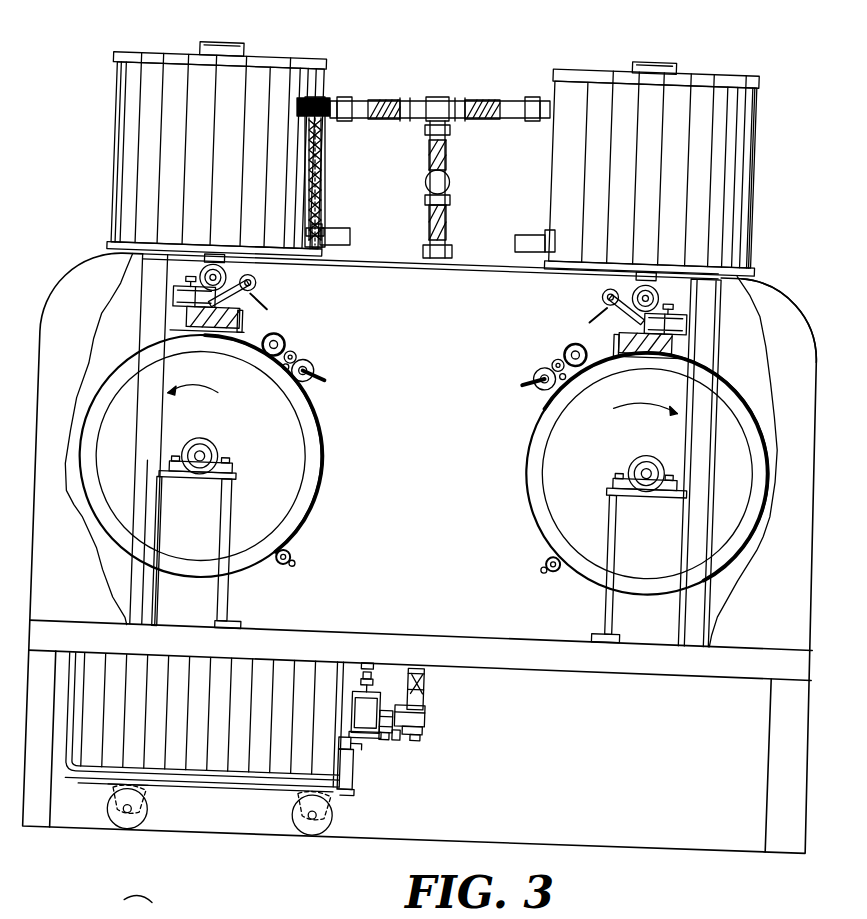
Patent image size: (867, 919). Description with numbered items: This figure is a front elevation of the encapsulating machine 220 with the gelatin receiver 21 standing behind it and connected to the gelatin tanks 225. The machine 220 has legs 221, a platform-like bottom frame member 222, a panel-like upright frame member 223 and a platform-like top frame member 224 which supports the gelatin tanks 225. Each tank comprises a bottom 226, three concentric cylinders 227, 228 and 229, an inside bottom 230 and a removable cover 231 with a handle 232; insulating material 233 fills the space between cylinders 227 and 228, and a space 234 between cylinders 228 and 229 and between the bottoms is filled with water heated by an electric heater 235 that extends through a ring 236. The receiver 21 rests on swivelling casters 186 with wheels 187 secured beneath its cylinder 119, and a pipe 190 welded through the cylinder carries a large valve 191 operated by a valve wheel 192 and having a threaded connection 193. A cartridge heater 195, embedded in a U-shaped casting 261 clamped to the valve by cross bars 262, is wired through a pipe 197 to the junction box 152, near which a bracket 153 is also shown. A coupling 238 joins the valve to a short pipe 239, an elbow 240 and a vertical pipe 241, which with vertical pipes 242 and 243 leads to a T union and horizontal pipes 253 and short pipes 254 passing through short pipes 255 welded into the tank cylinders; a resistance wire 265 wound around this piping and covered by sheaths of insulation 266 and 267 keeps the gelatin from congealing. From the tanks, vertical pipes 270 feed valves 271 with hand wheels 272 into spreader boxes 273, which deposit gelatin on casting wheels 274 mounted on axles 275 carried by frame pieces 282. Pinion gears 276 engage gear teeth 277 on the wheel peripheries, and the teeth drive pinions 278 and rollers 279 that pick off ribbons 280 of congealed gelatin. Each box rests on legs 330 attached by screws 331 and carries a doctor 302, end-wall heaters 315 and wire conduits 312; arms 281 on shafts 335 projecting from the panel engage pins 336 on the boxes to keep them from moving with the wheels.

The receiver 21 is at (218, 790).
The cylinder 119 is at (270, 765).
The junction box 152 is at (352, 782).
The bracket 153 is at (342, 800).
The swivelling casters 186 is at (115, 808).
The wheels 187 is at (118, 822).
The pipe 190 is at (350, 722).
The valve 191 is at (372, 708).
The valve wheel 192 is at (166, 907).
The threaded connection 193 is at (396, 740).
The cartridge heater 195 is at (374, 740).
The pipe 197 is at (362, 752).
The encapsulating machine 220 is at (630, 674).
The legs 221 is at (42, 818).
The bottom frame member 222 is at (527, 654).
The upright frame member 223 is at (772, 297).
The top frame member 224 is at (410, 262).
The gelatin tanks 225 is at (130, 140).
The bottom 226 is at (110, 247).
The cylinder 227 is at (318, 170).
The cylinder 228 is at (318, 150).
The cylinder 229 is at (320, 130).
The inside bottom 230 is at (318, 207).
The cover 231 is at (162, 56).
The handle 232 is at (228, 43).
The insulating material 233 is at (318, 190).
The space 234 is at (323, 160).
The electric heater 235 is at (322, 235).
The ring 236 is at (322, 242).
The coupling 238 is at (412, 706).
The short pipe 239 is at (420, 714).
The elbow 240 is at (430, 728).
The vertical pipe 241 is at (410, 700).
The vertical pipe 242 is at (442, 235).
The vertical pipe 243 is at (446, 160).
The horizontal pipes 253 is at (390, 97).
The short pipe 254 is at (338, 108).
The short pipes 255 is at (320, 100).
The U-shaped casting 261 is at (412, 738).
The cross bars 262 is at (393, 706).
The resistance wire 265 is at (432, 734).
The sheaths of insulation 266 is at (460, 105).
The sheaths of insulation 267 is at (440, 200).
The vertical pipes 270 is at (228, 278).
The valves 271 is at (251, 284).
The hand wheels 272 is at (210, 270).
The spreader boxes 273 is at (177, 316).
The casting wheels 274 is at (312, 445).
The axles 275 is at (205, 452).
The pinion gears 276 is at (292, 553).
The gear teeth 277 is at (290, 360).
The pinions 278 is at (285, 345).
The rollers 279 is at (305, 360).
The ribbons 280 is at (325, 370).
The arms 281 is at (240, 293).
The frame pieces 282 is at (232, 490).
The doctor 302 is at (423, 382).
The conduits 312 is at (128, 292).
The heaters 315 is at (208, 331).
The legs 330 is at (241, 336).
The screws 331 is at (185, 328).
The shafts 335 is at (262, 308).
The pins 336 is at (184, 300).